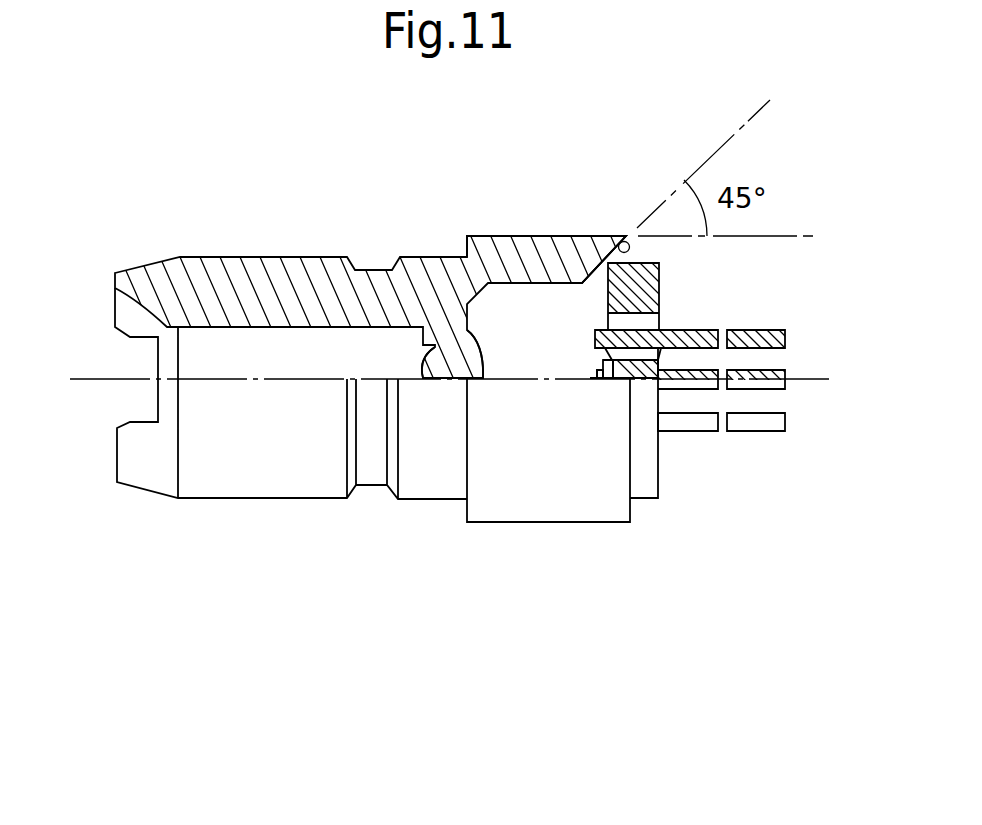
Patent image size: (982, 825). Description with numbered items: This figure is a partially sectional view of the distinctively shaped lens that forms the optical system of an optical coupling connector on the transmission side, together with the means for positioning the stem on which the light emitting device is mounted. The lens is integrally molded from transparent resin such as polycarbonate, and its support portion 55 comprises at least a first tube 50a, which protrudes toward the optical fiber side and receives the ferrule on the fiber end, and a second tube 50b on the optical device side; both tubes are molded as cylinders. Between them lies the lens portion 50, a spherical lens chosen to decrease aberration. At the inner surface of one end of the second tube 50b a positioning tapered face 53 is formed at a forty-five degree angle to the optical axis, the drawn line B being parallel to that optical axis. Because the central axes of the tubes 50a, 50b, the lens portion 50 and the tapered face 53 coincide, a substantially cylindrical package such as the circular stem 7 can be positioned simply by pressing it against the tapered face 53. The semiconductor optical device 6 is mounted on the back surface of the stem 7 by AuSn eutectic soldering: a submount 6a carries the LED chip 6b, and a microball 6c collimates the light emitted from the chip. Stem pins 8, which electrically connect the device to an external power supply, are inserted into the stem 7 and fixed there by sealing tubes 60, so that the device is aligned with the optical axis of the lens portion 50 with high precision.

The lens portion 50 is at (490, 379).
The first tube 50a is at (302, 486).
The second tube 50b is at (537, 252).
The positioning tapered face 53 is at (627, 236).
The support portion 55 is at (443, 332).
The sealing tube 60 is at (656, 328).
The semiconductor optical device 6 is at (640, 500).
The submount 6a is at (608, 379).
The LED chip 6b is at (600, 379).
The microball 6c is at (592, 379).
The stem 7 is at (650, 481).
The stem pins 8 is at (760, 428).
The line B is at (770, 237).